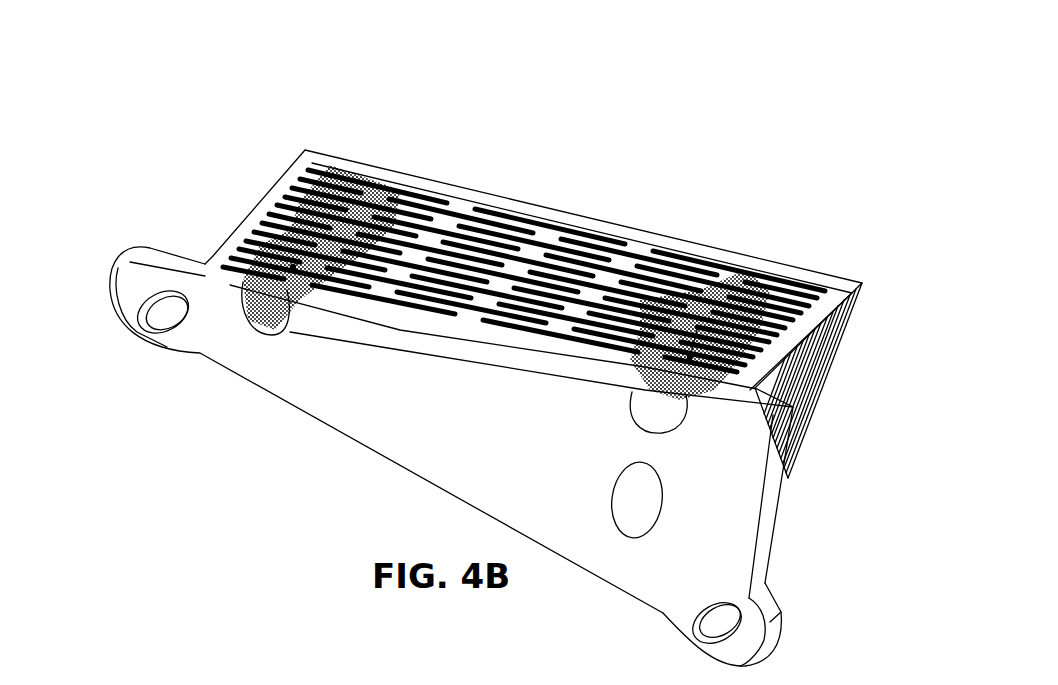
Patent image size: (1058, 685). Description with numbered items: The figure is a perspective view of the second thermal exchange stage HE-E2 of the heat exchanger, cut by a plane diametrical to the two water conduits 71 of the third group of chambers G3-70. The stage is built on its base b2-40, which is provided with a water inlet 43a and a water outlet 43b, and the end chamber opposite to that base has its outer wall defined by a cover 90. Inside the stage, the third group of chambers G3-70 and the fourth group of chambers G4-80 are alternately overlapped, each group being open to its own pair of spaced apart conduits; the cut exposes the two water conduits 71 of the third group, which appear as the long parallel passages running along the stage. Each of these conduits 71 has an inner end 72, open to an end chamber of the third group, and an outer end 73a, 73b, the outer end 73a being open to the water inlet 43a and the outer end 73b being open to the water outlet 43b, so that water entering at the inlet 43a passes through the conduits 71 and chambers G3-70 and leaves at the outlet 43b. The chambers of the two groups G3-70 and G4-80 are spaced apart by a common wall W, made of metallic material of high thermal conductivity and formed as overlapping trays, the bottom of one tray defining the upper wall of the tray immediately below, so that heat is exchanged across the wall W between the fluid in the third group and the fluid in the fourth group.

The second stage of the heat exchanger HE-E2 is at (270, 153).
The base of the second stage b2-40 is at (180, 248).
The inner ends of the conduits 72 is at (353, 193).
The water conduits 71 is at (333, 230).
The third group of chambers G3-70 is at (470, 250).
The fourth group of chambers G4-80 is at (520, 245).
The cover 90 is at (690, 235).
The water inlet 43a is at (292, 268).
The outer end of the conduit 73a is at (300, 256).
The common wall W is at (470, 250).
The water outlet 43b is at (690, 393).
The outer end of the conduit 73b is at (727, 360).